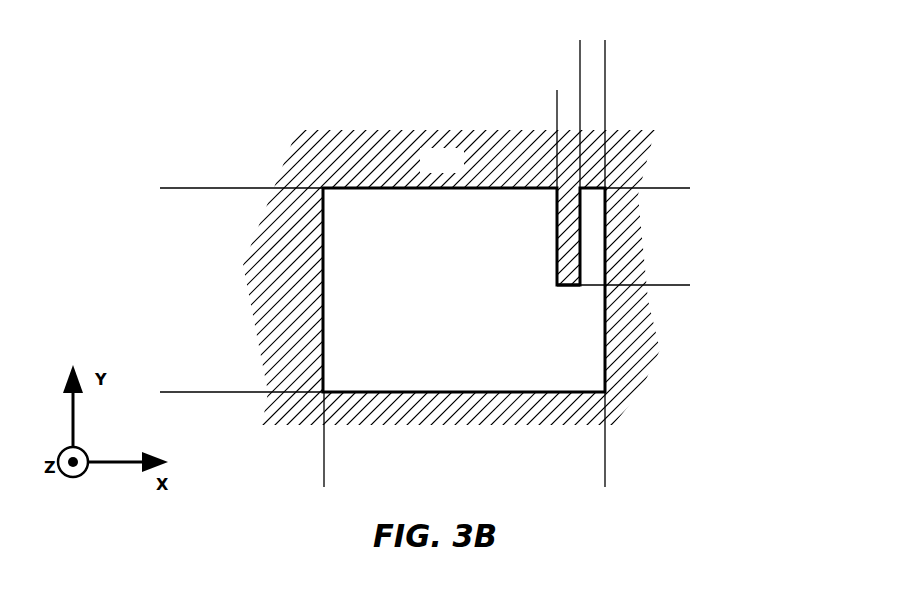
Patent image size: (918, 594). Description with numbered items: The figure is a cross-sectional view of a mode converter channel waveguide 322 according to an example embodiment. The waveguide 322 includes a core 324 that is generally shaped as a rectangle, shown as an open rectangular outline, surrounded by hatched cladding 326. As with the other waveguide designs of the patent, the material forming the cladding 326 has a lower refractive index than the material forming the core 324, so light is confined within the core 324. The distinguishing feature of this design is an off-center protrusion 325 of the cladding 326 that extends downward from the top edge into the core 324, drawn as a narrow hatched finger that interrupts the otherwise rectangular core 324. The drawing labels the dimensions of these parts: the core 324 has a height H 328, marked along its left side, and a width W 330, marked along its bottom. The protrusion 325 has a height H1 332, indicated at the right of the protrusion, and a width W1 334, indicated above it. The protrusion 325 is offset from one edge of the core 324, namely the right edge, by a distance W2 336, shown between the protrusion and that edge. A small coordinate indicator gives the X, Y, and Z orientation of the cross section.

The waveguide 322 is at (459, 261).
The core 324 is at (480, 276).
The protrusion 325 is at (564, 287).
The cladding 326 is at (423, 172).
The height H 328 is at (185, 392).
The width W 330 is at (324, 468).
The height H1 332 is at (675, 285).
The width W1 334 is at (600, 100).
The distance W2 336 is at (548, 55).